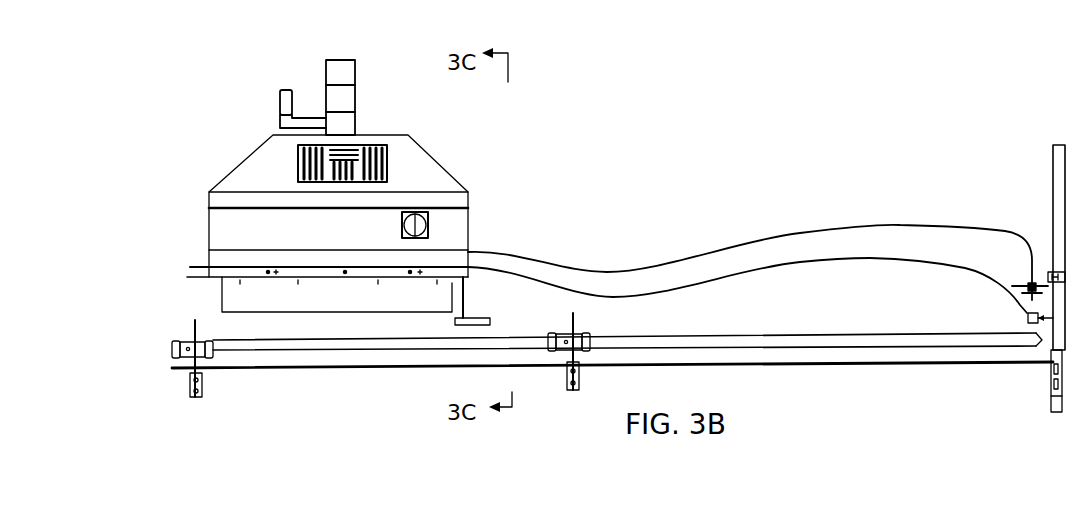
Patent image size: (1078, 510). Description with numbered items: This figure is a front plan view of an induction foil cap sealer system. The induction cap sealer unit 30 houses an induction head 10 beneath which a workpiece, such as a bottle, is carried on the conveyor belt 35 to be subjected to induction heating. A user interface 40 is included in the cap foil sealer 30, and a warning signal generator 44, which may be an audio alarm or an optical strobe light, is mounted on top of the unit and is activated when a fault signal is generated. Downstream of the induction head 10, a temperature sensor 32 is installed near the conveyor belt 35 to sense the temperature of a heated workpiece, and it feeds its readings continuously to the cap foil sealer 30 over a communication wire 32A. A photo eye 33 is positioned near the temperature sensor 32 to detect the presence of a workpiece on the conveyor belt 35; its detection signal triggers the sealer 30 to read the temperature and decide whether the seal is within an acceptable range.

The induction head 10 is at (230, 297).
The induction cap sealer unit 30 is at (247, 160).
The temperature sensor 32 is at (1027, 282).
The communication wire 32A is at (835, 228).
The photo eye 33 is at (1028, 320).
The conveyor belt 35 is at (353, 368).
The user interface 40 is at (385, 168).
The warning signal generator 44 is at (355, 75).